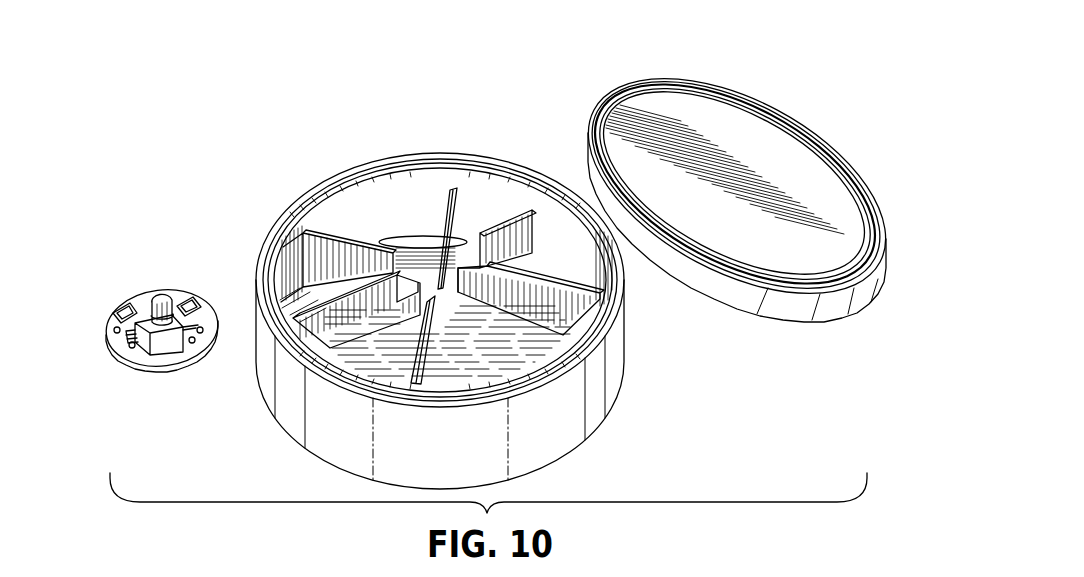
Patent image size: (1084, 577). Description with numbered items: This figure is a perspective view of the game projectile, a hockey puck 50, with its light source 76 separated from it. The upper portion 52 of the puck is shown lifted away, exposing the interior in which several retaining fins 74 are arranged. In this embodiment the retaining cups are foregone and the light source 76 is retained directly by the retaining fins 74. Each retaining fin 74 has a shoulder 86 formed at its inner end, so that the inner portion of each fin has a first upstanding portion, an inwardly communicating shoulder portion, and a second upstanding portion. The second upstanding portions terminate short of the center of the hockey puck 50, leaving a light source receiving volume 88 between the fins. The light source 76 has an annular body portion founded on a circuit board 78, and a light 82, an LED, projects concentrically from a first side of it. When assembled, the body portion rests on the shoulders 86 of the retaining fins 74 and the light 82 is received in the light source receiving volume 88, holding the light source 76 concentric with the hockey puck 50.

The hockey puck 50 is at (263, 181).
The upper portion 52 is at (754, 237).
The retaining fins 74 is at (358, 241).
The light source 76 is at (227, 323).
The circuit board 78 is at (150, 354).
The light 82 is at (153, 293).
The shoulder 86 is at (577, 288).
The light source receiving volume 88 is at (433, 293).